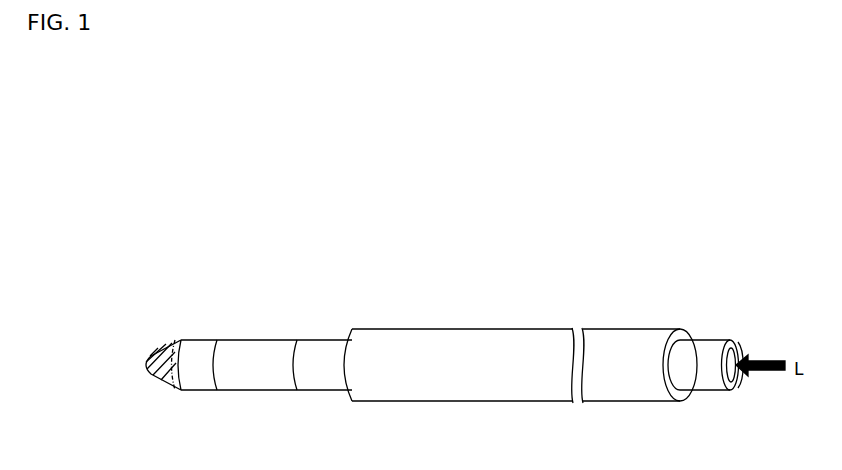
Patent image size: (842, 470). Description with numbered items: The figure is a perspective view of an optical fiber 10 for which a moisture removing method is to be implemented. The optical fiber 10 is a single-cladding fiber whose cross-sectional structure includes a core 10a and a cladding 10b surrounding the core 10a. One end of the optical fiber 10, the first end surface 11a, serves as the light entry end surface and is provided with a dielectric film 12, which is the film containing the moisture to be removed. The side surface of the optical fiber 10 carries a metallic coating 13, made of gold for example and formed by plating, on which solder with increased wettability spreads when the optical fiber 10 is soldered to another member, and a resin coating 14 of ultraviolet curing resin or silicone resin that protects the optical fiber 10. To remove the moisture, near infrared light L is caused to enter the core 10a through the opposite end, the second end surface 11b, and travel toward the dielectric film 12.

The optical fiber 10 is at (326, 347).
The core 10a is at (742, 380).
The cladding 10b is at (738, 391).
The first end surface 11a is at (133, 345).
The second end surface 11b is at (743, 351).
The dielectric film 12 is at (145, 375).
The metallic coating 13 is at (257, 347).
The resin coating 14 is at (446, 391).